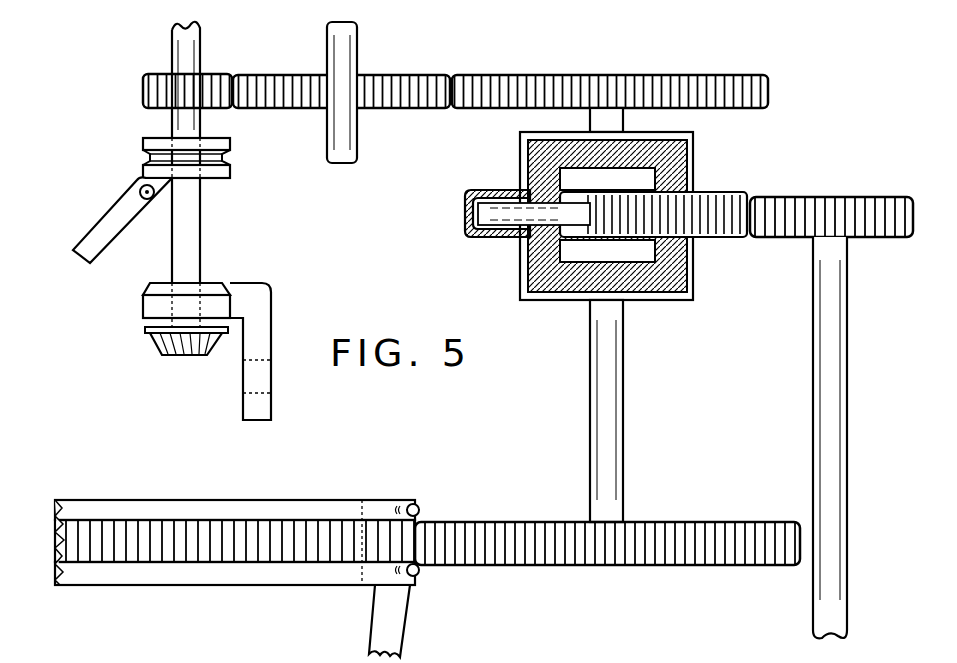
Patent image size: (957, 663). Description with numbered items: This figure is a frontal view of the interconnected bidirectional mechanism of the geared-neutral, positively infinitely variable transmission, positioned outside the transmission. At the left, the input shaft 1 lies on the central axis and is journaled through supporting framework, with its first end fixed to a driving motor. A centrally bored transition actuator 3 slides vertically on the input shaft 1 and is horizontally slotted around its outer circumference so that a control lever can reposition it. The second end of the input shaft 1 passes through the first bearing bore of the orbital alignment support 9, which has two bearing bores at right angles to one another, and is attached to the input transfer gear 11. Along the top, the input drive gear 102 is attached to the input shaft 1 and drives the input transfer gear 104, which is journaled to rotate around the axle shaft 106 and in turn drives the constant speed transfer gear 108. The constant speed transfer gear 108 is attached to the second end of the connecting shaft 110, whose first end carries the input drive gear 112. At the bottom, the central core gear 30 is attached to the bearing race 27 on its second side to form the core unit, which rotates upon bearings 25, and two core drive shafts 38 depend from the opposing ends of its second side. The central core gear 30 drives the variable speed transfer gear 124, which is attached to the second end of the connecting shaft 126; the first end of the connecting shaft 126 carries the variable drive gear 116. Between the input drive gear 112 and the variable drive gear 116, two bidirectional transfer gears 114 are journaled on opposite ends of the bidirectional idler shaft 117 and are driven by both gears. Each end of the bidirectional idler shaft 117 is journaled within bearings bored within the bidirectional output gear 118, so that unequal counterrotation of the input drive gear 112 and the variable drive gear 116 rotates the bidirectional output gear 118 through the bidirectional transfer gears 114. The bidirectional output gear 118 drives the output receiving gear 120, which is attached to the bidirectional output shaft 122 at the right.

The input shaft 1 is at (202, 238).
The transition actuator 3 is at (145, 140).
The orbital alignment support 9 is at (243, 411).
The input transfer gear 11 is at (150, 331).
The bearings 25 is at (420, 509).
The bearing race 27 is at (300, 500).
The central core gear 30 is at (152, 535).
The core drive shafts 38 is at (376, 612).
The input drive gear 102 is at (143, 88).
The input transfer gear 104 is at (272, 110).
The axle shaft 106 is at (358, 46).
The constant speed transfer gear 108 is at (770, 91).
The connecting shaft 110 is at (627, 118).
The input drive gear 112 is at (524, 131).
The bidirectional transfer gears 114 is at (690, 162).
The variable drive gear 116 is at (689, 302).
The bidirectional idler shaft 117 is at (466, 211).
The bidirectional output gear 118 is at (731, 240).
The output receiving gear 120 is at (885, 197).
The bidirectional output shaft 122 is at (813, 386).
The variable speed transfer gear 124 is at (713, 522).
The connecting shaft 126 is at (590, 404).